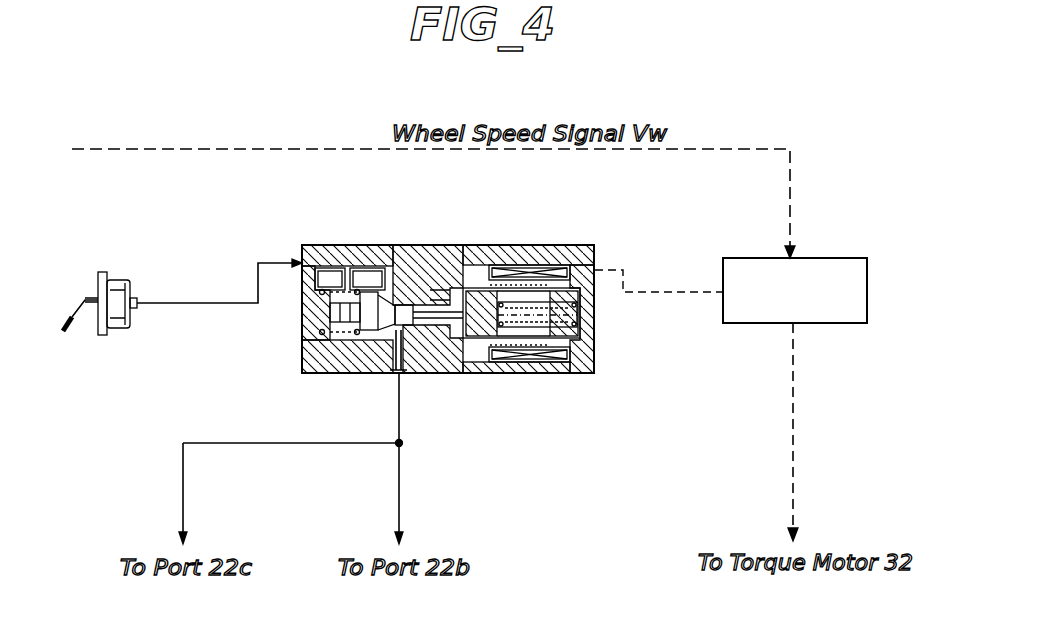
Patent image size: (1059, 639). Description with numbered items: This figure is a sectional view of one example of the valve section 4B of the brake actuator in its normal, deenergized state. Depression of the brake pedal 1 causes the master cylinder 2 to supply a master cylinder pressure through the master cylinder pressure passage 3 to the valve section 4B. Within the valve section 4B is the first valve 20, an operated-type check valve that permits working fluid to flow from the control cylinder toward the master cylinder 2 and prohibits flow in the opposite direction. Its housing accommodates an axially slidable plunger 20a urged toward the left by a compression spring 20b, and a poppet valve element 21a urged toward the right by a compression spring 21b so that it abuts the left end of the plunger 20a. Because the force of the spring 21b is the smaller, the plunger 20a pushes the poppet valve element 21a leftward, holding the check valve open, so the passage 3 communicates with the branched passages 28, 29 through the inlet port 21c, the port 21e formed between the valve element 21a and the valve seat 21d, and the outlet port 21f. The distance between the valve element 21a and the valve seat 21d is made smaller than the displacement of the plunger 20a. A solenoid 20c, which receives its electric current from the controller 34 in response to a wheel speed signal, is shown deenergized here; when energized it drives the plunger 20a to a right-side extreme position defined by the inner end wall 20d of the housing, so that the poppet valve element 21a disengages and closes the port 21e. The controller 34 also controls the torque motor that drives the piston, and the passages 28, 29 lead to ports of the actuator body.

The brake pedal 1 is at (70, 314).
The master cylinder 2 is at (122, 334).
The master cylinder pressure passage 3 is at (188, 306).
The valve section 4B is at (553, 242).
The first valve 20 is at (454, 380).
The plunger 20a is at (470, 310).
The compression spring 20b is at (578, 312).
The solenoid 20c is at (564, 267).
The inner end wall 20d is at (595, 276).
The poppet valve element 21a is at (370, 268).
The compression spring 21b is at (326, 268).
The inlet port 21c is at (311, 246).
The valve seat 21d is at (437, 290).
The port 21e is at (395, 258).
The outlet port 21f is at (377, 374).
The passage 28 is at (183, 485).
The passage 29 is at (402, 475).
The controller 34 is at (761, 257).